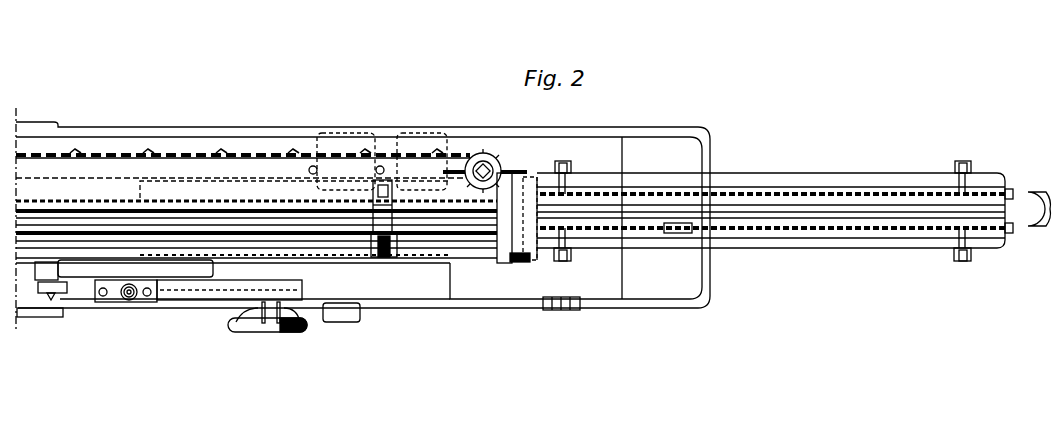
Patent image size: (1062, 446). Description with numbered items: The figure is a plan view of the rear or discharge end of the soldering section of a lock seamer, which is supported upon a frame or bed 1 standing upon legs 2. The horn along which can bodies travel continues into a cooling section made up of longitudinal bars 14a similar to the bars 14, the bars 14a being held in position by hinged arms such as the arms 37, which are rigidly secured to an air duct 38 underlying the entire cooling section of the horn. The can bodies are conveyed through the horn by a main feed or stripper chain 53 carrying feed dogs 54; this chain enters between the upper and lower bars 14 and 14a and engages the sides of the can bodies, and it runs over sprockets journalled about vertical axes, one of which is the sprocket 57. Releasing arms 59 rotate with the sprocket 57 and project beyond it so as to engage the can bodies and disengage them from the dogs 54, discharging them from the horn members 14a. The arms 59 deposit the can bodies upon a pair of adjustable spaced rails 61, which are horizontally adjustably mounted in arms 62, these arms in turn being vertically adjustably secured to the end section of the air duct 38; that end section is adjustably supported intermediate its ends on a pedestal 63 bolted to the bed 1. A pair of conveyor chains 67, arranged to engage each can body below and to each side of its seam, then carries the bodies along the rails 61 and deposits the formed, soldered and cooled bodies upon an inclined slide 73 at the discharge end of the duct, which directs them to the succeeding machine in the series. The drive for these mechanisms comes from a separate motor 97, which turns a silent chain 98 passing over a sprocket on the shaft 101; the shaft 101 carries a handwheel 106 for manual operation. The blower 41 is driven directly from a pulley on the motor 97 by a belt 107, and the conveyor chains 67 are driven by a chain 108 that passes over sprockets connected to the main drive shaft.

The frame or bed 1 is at (703, 281).
The legs 2 is at (62, 318).
The longitudinal bars 14 is at (290, 203).
The longitudinal bars 14a is at (512, 192).
The hinged arms 37 is at (378, 236).
The air duct 38 is at (320, 259).
The blower 41 is at (104, 259).
The main feed chain 53 is at (249, 152).
The feed dogs 54 is at (256, 157).
The sprocket 57 is at (488, 155).
The releasing arms 59 is at (452, 170).
The adjustable spaced rails 61 is at (628, 187).
The arms 62 is at (574, 167).
The pedestal 63 is at (682, 234).
The conveyor chains 67 is at (773, 190).
The inclined slide 73 is at (1040, 192).
The motor 97 is at (222, 188).
The silent chain 98 is at (233, 287).
The shaft 101 is at (268, 286).
The handwheel 106 is at (276, 333).
The belt 107 is at (124, 281).
The chain 108 is at (522, 261).